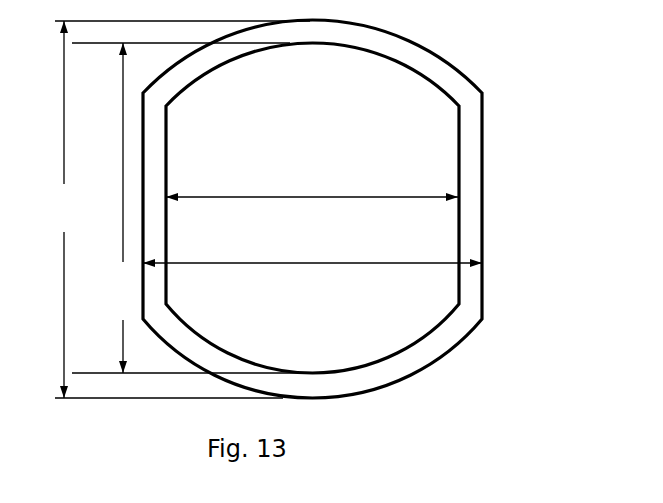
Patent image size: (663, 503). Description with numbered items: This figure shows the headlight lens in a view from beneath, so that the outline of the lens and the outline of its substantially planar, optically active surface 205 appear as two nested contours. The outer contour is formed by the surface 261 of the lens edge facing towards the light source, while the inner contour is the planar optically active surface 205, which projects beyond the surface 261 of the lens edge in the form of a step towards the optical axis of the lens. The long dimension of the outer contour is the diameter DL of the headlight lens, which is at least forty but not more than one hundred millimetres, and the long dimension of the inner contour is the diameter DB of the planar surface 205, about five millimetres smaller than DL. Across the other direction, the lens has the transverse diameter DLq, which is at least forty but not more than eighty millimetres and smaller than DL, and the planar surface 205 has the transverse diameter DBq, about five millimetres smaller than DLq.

The surface of the lens edge facing towards the light source 261 is at (417, 57).
The planar optically active surface 205 is at (433, 152).
The diameter of the headlight lens DL is at (180, 209).
The diameter of the planar optically active surface DB is at (191, 208).
The transverse diameter of the planar optically active surface DBq is at (312, 186).
The transverse diameter of the headlight lens DLq is at (312, 250).